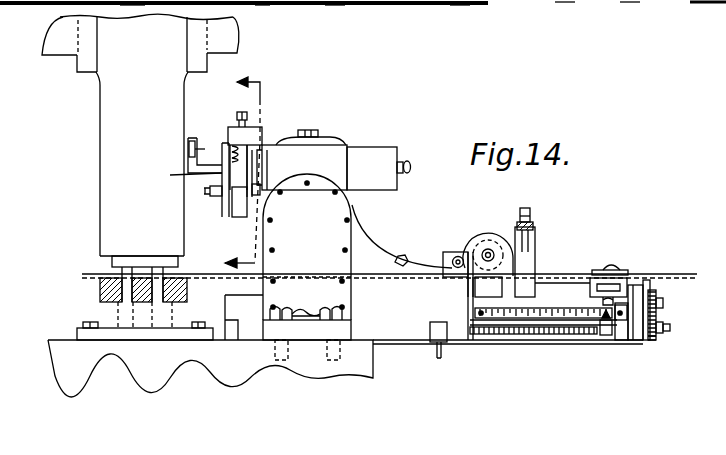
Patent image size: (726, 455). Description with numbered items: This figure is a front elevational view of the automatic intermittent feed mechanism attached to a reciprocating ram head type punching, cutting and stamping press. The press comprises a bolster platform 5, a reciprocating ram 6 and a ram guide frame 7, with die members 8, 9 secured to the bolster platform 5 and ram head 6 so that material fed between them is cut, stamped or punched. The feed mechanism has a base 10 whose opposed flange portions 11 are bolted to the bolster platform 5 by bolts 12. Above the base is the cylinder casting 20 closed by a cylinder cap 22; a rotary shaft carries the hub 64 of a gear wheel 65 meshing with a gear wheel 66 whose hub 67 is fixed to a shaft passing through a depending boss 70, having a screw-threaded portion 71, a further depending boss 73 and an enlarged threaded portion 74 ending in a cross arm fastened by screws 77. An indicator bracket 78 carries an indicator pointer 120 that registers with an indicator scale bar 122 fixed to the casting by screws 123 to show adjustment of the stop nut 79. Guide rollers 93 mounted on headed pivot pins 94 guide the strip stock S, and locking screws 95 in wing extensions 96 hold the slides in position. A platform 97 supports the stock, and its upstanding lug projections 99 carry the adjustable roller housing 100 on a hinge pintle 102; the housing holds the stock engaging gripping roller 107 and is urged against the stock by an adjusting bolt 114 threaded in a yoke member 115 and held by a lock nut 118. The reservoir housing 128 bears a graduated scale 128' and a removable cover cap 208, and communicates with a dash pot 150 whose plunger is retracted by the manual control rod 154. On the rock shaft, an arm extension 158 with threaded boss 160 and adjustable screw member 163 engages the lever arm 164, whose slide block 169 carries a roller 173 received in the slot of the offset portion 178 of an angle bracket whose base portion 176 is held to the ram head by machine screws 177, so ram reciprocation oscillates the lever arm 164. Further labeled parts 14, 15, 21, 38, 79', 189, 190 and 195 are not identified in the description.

The bolster platform 5 is at (62, 352).
The reciprocating ram 6 is at (102, 170).
The ram guide frame 7 is at (225, 48).
The die member 8 is at (105, 298).
The die member 9 is at (112, 260).
The base 10 is at (393, 333).
The flange portions 11 is at (350, 330).
The bolts 12 is at (306, 304).
The belt 14 is at (365, 255).
The section line 15- 15 is at (230, 177).
The cylinder casting 20 is at (565, 2).
The top member 21 is at (392, 6).
The cylinder cap 22 is at (636, 340).
The clip 38 is at (405, 256).
The hub 64 is at (663, 303).
The gear wheel 65 is at (656, 294).
The gear wheel 66 is at (650, 338).
The hub 67 is at (660, 333).
The depending boss 70 is at (622, 334).
The screw-threaded portion 71 is at (624, 2).
The depending boss 73 is at (460, 5).
The enlarged threaded portion 74 is at (334, 5).
The screws 77 is at (670, 327).
The indicator bracket 78 is at (708, 3).
The stop nut 79 is at (268, 17).
The member 79' is at (132, 11).
The guide rollers 93 is at (622, 270).
The headed pivot pins 94 is at (611, 262).
The locking screws 95 is at (603, 303).
The wing extensions 96 is at (590, 297).
The platform 97 is at (488, 287).
The upstanding lug projections 99 is at (452, 266).
The adjustable roller housing 100 is at (490, 240).
The hinge pintle 102 is at (455, 260).
The stock engaging gripping roller 107 is at (446, 252).
The adjusting bolt 114 is at (528, 210).
The yoke member 115 is at (530, 238).
The lock nut 118 is at (533, 224).
The indicator pointer 120 is at (586, 320).
The indicator scale bar 122 is at (542, 318).
The screws 123 is at (481, 318).
The reservoir housing 128 is at (304, 167).
The graduated scale 128' is at (274, 167).
The dash pot 150 is at (380, 150).
The manual control rod 154 is at (411, 167).
The arm extension 158 is at (255, 152).
The threaded boss 160 is at (245, 136).
The adjustable screw member 163 is at (247, 122).
The lever arm 164 is at (250, 218).
The slide block 169 is at (237, 218).
The roller 173 is at (213, 196).
The base portion 176 is at (200, 137).
The machine screws 177 is at (212, 170).
The offset portion 178 is at (213, 173).
The guard 189 is at (307, 247).
The screws 190 is at (282, 193).
The cap 195 is at (306, 130).
The removable cover cap 208 is at (330, 138).
The strip stock S is at (665, 272).